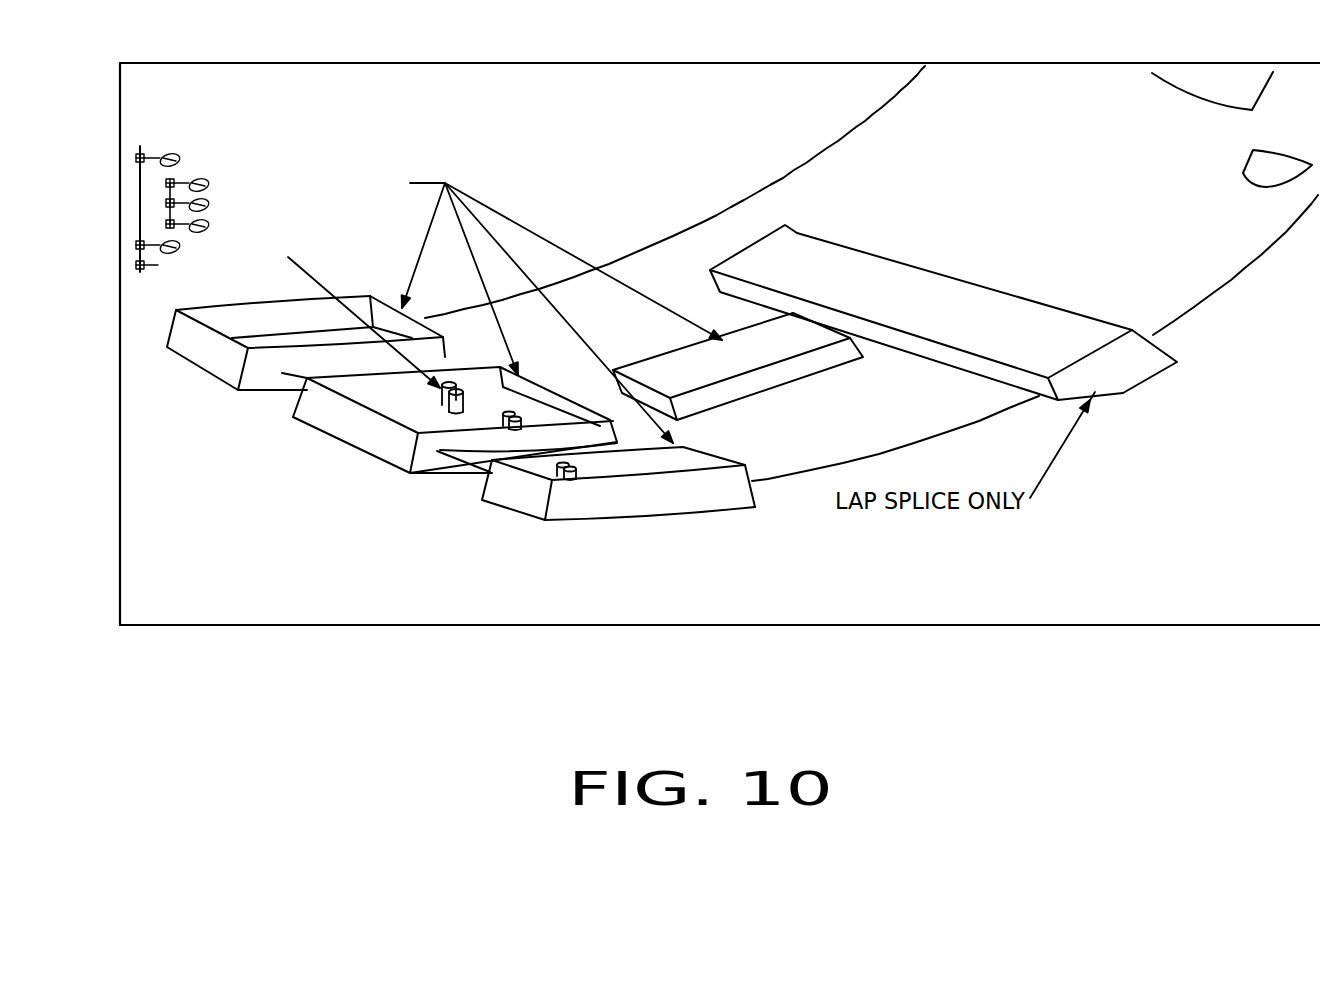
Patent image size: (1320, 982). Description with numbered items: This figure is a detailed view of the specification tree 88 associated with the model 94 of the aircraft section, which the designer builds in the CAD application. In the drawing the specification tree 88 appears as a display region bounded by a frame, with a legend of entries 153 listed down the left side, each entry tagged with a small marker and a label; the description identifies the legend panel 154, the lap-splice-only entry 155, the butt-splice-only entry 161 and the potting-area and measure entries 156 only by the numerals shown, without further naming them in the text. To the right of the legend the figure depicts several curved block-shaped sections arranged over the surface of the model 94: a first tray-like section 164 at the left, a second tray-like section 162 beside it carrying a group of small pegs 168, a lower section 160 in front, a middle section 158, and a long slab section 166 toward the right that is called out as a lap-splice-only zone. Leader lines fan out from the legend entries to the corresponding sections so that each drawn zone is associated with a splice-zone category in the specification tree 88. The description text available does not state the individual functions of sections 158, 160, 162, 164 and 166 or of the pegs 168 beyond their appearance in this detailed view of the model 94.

The specification tree 88 is at (202, 40).
The model 94 is at (693, 645).
The legend of splice zone types 153 is at (165, 182).
The legend panel 154 is at (119, 91).
The lap splice only legend entry 155 is at (165, 203).
The potting area / measure legend entry 156 is at (234, 257).
The splice zone section 158 is at (770, 392).
The splice zone section 160 is at (520, 515).
The butt splice only legend entry 161 is at (167, 223).
The splice zone tray section 162 is at (293, 417).
The splice zone tray section 164 is at (162, 348).
The lap splice only zone section 166 is at (1127, 393).
The potting area pegs 168 is at (442, 396).